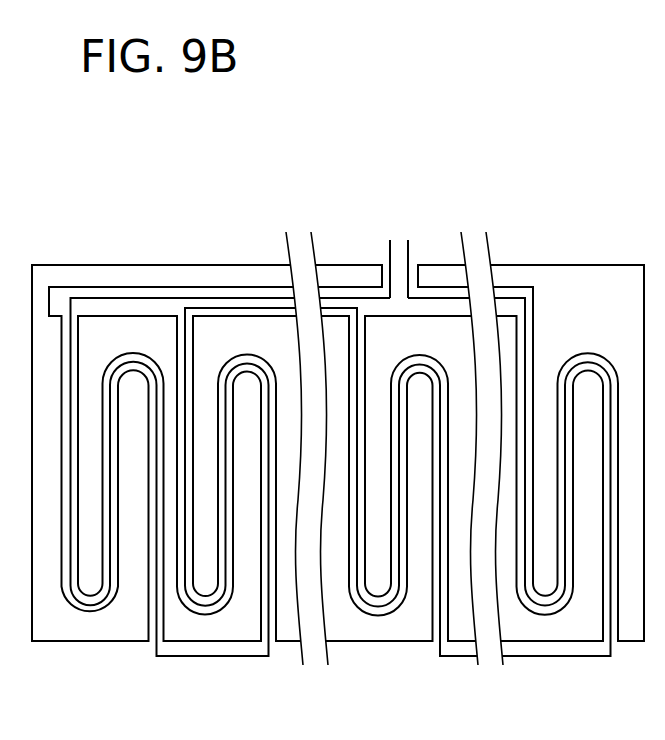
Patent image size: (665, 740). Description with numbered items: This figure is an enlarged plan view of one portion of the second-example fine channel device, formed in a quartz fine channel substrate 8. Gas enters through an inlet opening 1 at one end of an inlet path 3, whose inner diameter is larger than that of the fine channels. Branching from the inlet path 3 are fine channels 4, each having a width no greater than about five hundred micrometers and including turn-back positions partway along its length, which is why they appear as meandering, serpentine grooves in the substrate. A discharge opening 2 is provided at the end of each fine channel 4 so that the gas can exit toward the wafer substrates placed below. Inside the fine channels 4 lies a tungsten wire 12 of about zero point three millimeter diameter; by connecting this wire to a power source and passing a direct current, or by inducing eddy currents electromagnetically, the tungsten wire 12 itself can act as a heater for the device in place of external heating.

The inlet opening 1 is at (421, 251).
The discharge opening 2 is at (427, 657).
The inlet path 3 is at (522, 279).
The fine channel 4 is at (98, 629).
The fine channel substrate 8 is at (163, 263).
The tungsten wire 12 is at (385, 226).